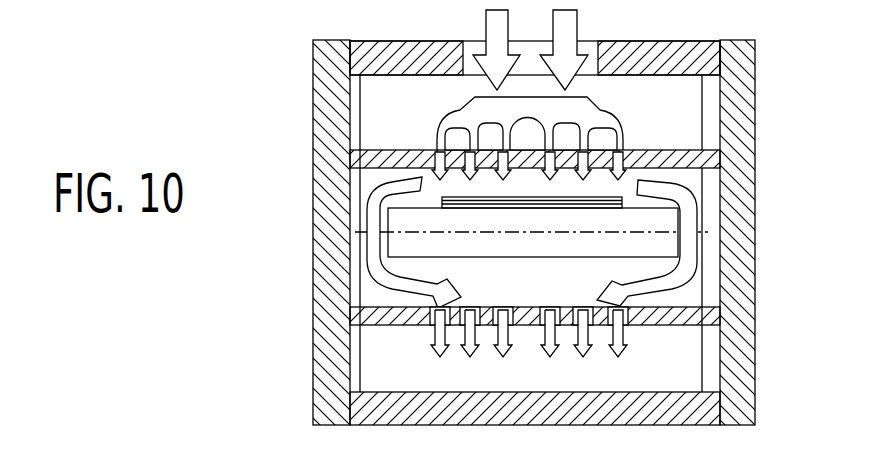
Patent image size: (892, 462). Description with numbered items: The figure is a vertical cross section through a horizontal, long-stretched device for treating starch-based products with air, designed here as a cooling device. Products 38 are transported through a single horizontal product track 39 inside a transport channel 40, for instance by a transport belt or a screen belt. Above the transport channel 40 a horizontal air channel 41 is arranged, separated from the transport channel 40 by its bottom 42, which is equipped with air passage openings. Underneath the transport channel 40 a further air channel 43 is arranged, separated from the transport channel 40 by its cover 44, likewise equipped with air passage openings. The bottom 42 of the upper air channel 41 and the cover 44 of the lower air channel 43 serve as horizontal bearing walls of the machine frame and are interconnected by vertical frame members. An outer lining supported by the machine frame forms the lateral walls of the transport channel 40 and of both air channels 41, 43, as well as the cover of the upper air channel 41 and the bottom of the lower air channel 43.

The products 38 is at (420, 187).
The product track 39 is at (667, 206).
The transport channel 40 is at (368, 293).
The air channel 41 is at (687, 121).
The bottom 42 is at (412, 150).
The further air channel 43 is at (682, 368).
The cover 44 is at (528, 307).